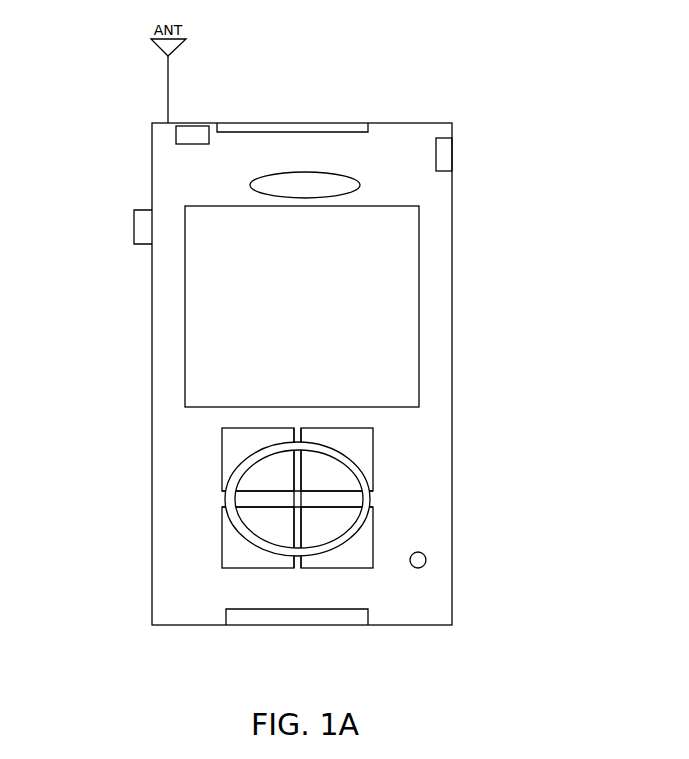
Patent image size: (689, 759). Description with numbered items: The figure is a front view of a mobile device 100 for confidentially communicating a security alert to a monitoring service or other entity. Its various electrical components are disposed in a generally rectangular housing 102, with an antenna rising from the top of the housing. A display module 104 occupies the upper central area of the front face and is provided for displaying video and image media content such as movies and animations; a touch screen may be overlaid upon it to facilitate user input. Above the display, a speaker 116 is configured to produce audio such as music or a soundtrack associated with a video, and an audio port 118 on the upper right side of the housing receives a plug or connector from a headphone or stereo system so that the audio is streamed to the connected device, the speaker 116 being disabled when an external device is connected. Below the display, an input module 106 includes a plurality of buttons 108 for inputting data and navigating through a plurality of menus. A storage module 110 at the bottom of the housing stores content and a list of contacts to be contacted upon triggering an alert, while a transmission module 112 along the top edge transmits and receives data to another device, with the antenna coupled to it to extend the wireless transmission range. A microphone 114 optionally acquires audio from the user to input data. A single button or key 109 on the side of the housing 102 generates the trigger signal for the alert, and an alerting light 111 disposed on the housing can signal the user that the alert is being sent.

The mobile device 100 is at (553, 204).
The housing 102 is at (152, 153).
The display module 104 is at (419, 282).
The input module 106 is at (294, 498).
The buttons 108 is at (268, 472).
The button or key 109 is at (134, 222).
The storage module 110 is at (223, 613).
The alerting light 111 is at (192, 126).
The transmission module 112 is at (327, 123).
The microphone 114 is at (420, 552).
The speaker 116 is at (305, 172).
The audio port 118 is at (452, 155).